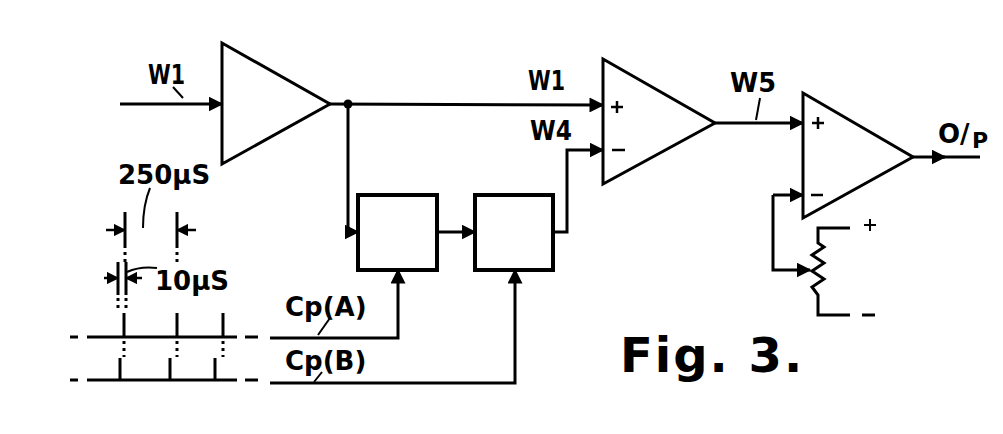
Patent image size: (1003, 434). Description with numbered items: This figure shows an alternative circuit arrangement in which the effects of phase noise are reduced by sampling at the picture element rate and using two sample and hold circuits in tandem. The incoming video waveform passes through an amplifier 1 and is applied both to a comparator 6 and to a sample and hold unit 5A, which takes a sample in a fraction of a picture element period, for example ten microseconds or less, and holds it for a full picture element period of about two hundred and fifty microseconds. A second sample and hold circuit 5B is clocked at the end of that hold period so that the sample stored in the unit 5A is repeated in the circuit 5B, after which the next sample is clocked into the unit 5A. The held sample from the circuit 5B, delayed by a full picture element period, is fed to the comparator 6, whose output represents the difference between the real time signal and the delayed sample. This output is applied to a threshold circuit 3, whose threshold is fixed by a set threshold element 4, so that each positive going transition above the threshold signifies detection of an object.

The amplifier 1 is at (285, 70).
The sample and hold unit 5A is at (413, 177).
The sample and hold circuit 5B is at (515, 177).
The comparator 6 is at (645, 82).
The threshold circuit 3 is at (863, 125).
The set threshold element 4 is at (832, 245).